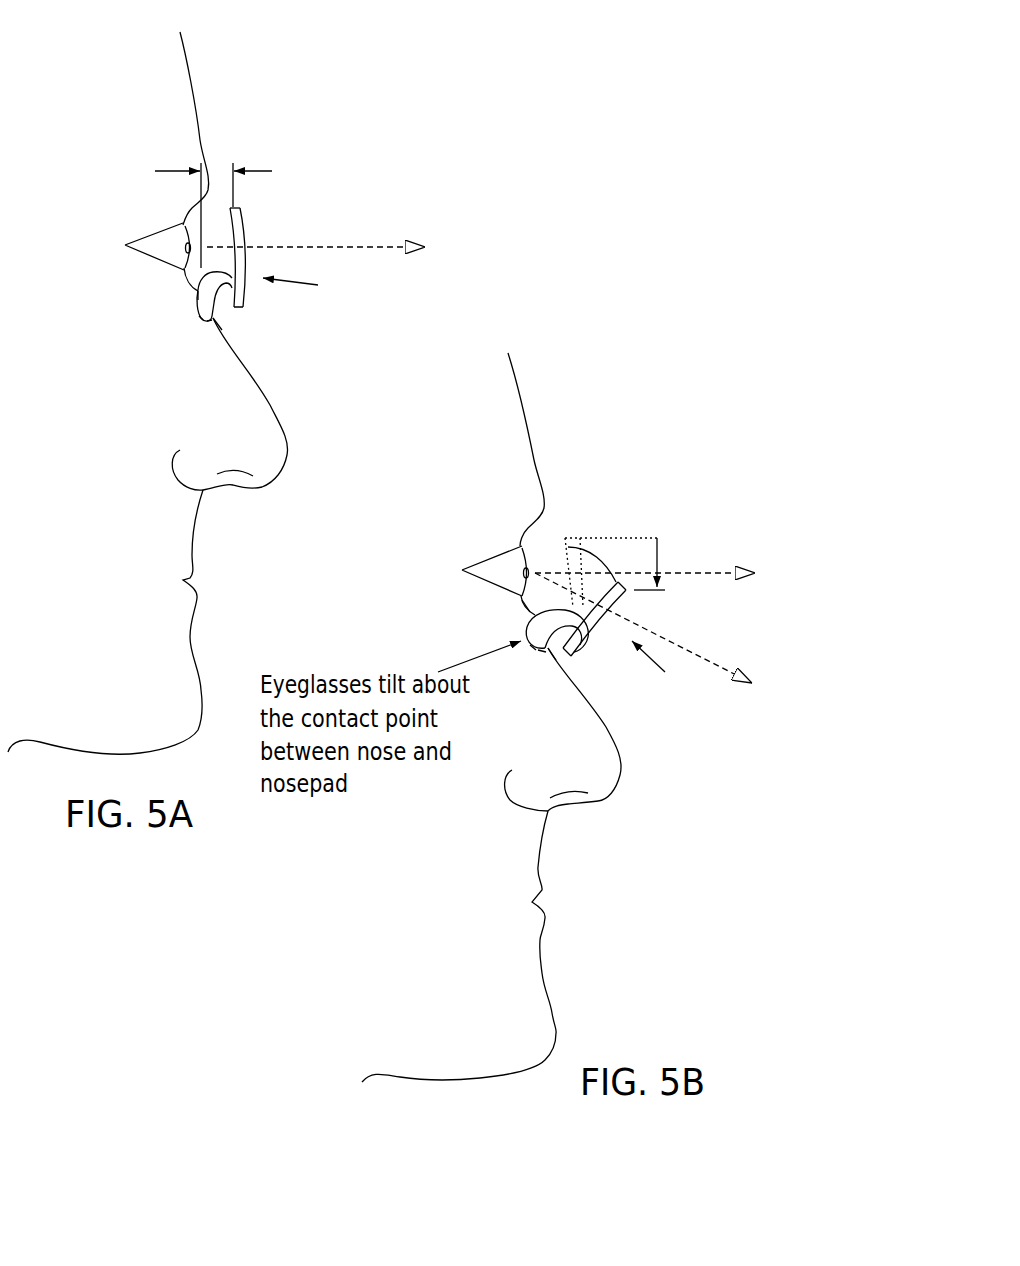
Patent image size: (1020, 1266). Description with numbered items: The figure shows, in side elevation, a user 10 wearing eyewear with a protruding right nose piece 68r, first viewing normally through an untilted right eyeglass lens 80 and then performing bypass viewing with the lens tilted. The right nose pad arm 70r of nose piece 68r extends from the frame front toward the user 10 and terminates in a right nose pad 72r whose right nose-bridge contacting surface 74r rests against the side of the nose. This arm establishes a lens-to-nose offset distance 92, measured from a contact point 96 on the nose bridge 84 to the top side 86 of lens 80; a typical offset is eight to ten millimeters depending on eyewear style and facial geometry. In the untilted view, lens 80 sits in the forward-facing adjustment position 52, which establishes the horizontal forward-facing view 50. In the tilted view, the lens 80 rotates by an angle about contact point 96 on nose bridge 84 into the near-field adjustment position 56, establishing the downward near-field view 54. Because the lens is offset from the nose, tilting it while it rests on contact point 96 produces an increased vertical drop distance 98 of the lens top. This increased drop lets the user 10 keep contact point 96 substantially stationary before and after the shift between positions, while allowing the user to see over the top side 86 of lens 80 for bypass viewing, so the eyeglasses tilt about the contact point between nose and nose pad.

In FIG. 5A, the user 10 is at (188, 52).
In FIG. 5B, the user 10 is at (518, 377).
In FIG. 5A, the forward-facing view 50 is at (378, 244).
In FIG. 5B, the forward-facing view 50 is at (718, 572).
In FIG. 5A, the forward-facing adjustment position 52 is at (305, 287).
In FIG. 5B, the near-field view 54 is at (718, 668).
In FIG. 5B, the near-field adjustment position 56 is at (661, 669).
In FIG. 5A, the right nose piece 68r is at (199, 323).
In FIG. 5B, the right nose piece 68r is at (519, 628).
In FIG. 5A, the right nose pad arm 70r is at (228, 284).
In FIG. 5B, the right nose pad arm 70r is at (578, 640).
In FIG. 5A, the right nose pad 72r is at (197, 296).
In FIG. 5B, the right nose pad 72r is at (522, 600).
In FIG. 5A, the right nose-bridge contacting surface 74r is at (212, 327).
In FIG. 5B, the right nose-bridge contacting surface 74r is at (541, 653).
In FIG. 5A, the right eyeglass lens 80 is at (247, 228).
In FIG. 5B, the right eyeglass lens 80 is at (626, 602).
In FIG. 5A, the nose bridge 84 is at (220, 322).
In FIG. 5B, the nose bridge 84 is at (552, 655).
In FIG. 5A, the top side of lens 86 is at (238, 206).
In FIG. 5B, the top side of lens 86 is at (614, 580).
In FIG. 5A, the lens-to-nose offset distance 92 is at (178, 171).
In FIG. 5A, the contact point 96 is at (200, 318).
In FIG. 5B, the contact point 96 is at (533, 648).
In FIG. 5B, the vertical drop distance 98 is at (659, 559).